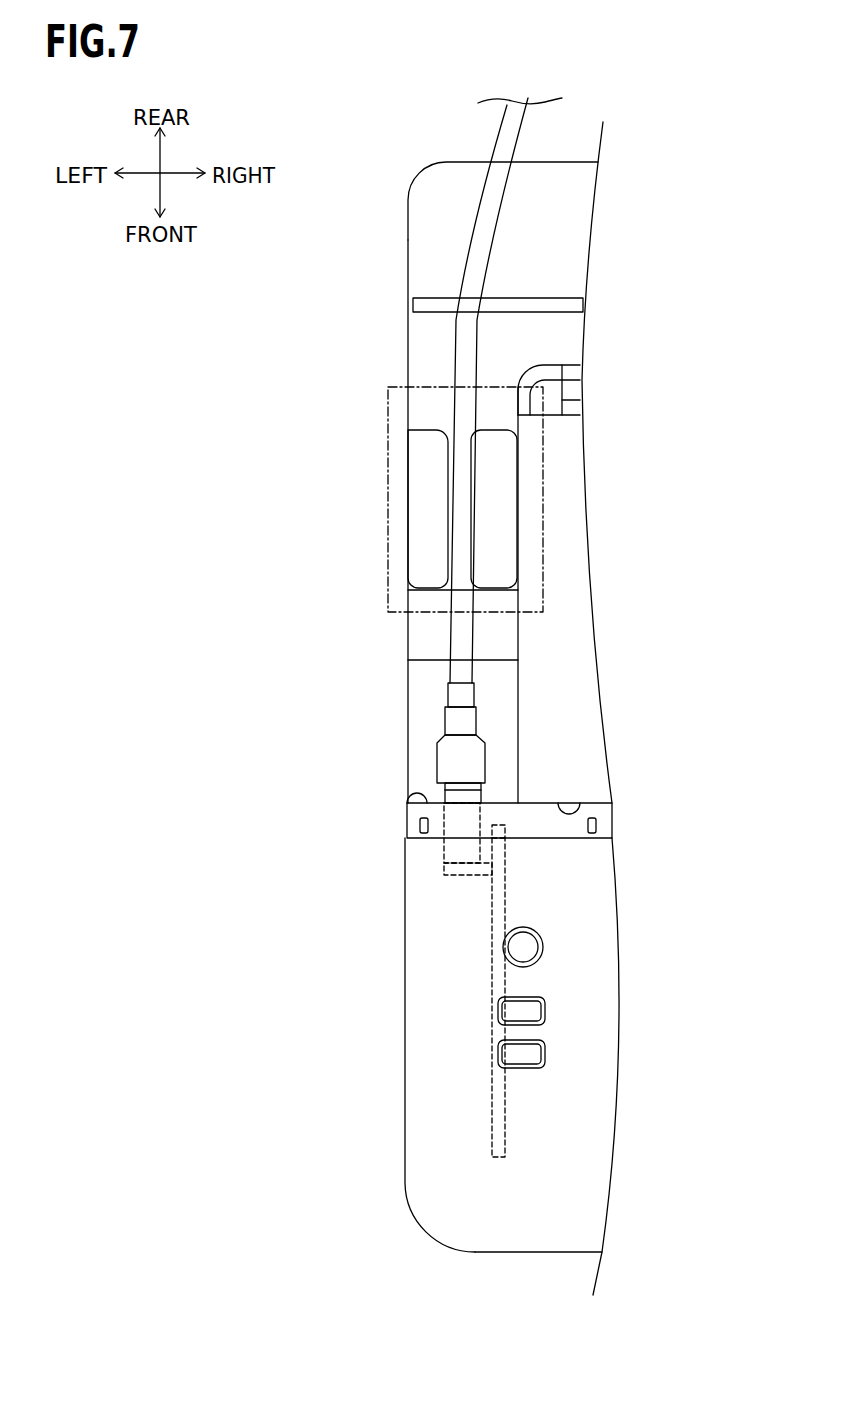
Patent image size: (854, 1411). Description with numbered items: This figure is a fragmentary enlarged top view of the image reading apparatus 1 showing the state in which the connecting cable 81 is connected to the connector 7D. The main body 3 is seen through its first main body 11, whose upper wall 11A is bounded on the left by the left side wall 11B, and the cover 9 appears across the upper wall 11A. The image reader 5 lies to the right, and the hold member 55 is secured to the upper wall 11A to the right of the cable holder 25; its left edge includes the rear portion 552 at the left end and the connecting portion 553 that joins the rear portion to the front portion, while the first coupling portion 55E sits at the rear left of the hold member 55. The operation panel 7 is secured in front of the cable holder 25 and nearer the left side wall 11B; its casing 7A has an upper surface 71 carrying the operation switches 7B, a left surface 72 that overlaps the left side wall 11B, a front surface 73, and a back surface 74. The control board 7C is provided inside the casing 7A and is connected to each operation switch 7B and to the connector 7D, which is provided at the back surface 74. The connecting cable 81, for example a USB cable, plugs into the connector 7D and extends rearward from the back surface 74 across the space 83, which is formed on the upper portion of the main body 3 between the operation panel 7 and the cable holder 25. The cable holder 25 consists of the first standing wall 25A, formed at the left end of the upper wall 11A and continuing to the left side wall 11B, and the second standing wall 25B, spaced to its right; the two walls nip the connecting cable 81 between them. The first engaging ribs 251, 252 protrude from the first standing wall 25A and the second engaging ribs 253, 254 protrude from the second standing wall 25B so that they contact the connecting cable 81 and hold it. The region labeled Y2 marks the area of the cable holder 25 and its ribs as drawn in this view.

The image reading apparatus 1 is at (282, 973).
The main body 3 is at (393, 698).
The image reader 5 is at (577, 668).
The operation panel 7 is at (413, 1220).
The casing 7A is at (423, 1078).
The operation switches 7B is at (527, 1012).
The control board 7C is at (500, 913).
The connector 7D is at (457, 800).
The cover 9 is at (572, 305).
The first main body 11 is at (446, 162).
The upper wall 11A is at (570, 239).
The left side wall 11B is at (408, 280).
The cable holder 25 is at (430, 423).
The first standing wall 25A is at (420, 515).
The second standing wall 25B is at (497, 508).
The hold member 55 is at (583, 688).
The first coupling portion 55E is at (572, 393).
The upper surface 71 is at (565, 1154).
The left surface 72 is at (403, 1118).
The front surface 73 is at (530, 1253).
The back surface 74 is at (405, 803).
The connecting cable 81 is at (452, 760).
The space 83 is at (430, 672).
The first engaging rib 251 is at (448, 562).
The first engaging rib 252 is at (448, 465).
The second engaging rib 253 is at (477, 560).
The second engaging rib 254 is at (477, 460).
The rear portion 552 is at (514, 647).
The connecting portion 553 is at (583, 800).
The region Y2 is at (397, 387).